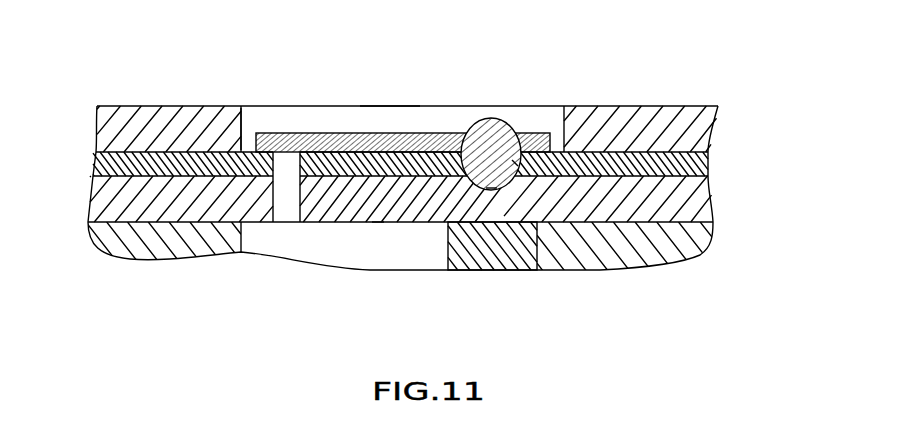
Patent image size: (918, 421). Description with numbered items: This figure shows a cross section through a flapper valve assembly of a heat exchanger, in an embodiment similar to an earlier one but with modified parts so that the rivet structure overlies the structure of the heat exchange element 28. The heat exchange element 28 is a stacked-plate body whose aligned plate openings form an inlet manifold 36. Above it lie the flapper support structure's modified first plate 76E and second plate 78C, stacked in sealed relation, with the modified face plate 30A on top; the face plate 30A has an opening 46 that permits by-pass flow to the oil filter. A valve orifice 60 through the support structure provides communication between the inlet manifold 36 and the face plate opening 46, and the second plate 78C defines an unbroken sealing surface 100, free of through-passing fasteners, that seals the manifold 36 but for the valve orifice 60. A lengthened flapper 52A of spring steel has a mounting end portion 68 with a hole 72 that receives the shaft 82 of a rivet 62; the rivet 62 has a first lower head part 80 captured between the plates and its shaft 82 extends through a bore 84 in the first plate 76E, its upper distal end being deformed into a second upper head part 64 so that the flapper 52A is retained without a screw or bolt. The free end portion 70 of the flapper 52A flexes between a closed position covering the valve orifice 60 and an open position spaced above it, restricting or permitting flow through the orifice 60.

The heat exchange element 28 is at (717, 243).
The face plate 30A is at (705, 134).
The inlet manifold 36 is at (343, 266).
The face plate opening 46 is at (413, 113).
The lengthened flapper 52A is at (318, 145).
The valve orifice 60 is at (284, 226).
The rivet 62 is at (474, 137).
The second upper head part 64 is at (490, 128).
The mounting end portion 68 is at (534, 119).
The free end portion 70 is at (284, 120).
The hole 72 is at (476, 137).
The first plate 76E is at (705, 163).
The second plate 78C is at (705, 197).
The first lower head part 80 is at (493, 165).
The pin or shaft 82 is at (497, 168).
The bore 84 is at (514, 166).
The sealing surface 100 is at (377, 222).